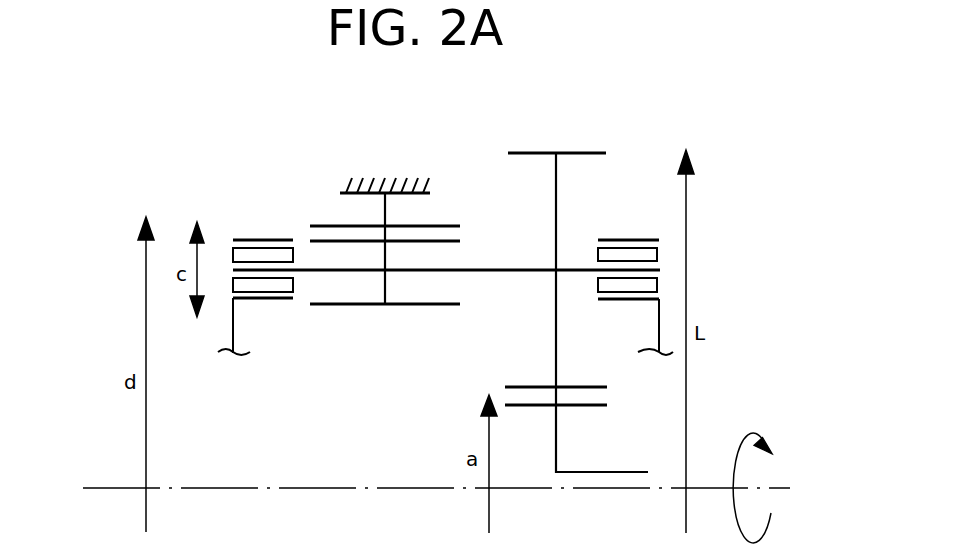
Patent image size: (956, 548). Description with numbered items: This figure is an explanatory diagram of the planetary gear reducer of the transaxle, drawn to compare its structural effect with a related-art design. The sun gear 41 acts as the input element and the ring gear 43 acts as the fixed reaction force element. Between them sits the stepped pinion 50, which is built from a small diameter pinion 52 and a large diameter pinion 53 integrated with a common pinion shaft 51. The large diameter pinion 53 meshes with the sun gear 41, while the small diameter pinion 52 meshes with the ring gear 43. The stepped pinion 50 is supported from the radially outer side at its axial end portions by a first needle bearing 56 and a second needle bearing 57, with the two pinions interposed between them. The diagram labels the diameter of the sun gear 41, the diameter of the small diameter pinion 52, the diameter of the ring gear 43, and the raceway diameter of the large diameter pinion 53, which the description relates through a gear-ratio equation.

The stepped pinion 50 is at (483, 217).
The pinion shaft 51 is at (508, 268).
The ring gear 43 is at (343, 225).
The small diameter pinion 52 is at (356, 307).
The large diameter pinion 53 is at (567, 152).
The sun gear 41 is at (592, 407).
The first needle bearing 56 is at (633, 253).
The second needle bearing 57 is at (263, 253).